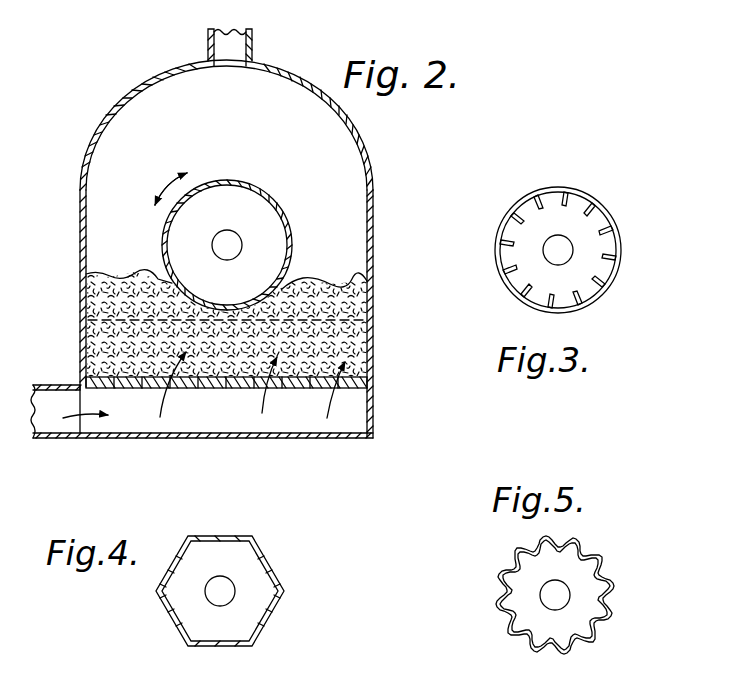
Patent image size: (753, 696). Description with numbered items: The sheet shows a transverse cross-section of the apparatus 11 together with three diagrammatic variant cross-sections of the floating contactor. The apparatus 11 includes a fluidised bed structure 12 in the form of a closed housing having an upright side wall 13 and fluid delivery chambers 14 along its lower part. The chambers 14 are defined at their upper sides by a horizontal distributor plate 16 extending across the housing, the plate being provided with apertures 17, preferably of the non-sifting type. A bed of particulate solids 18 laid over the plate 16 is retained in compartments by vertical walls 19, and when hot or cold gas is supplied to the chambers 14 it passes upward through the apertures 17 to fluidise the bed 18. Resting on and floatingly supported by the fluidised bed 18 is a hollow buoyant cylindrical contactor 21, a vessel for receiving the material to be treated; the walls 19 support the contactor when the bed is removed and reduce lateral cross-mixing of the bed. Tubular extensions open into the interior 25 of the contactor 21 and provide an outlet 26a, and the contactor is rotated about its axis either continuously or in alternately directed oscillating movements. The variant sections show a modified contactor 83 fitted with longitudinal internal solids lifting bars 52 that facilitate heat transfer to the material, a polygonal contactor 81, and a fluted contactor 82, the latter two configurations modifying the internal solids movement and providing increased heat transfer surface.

In FIG. 2, the apparatus 11 is at (369, 146).
In FIG. 2, the fluidised bed structure 12 is at (376, 218).
In FIG. 2, the upright side wall 13 is at (78, 212).
In FIG. 2, the fluid delivery chambers 14 is at (350, 412).
In FIG. 2, the horizontal distributor plate 16 is at (366, 383).
In FIG. 2, the apertures 17 is at (248, 388).
In FIG. 2, the bed of particulate solids 18 is at (360, 300).
In FIG. 2, the vertical walls 19 is at (330, 317).
In FIG. 2, the hollow buoyant cylindrical contactor 21 is at (268, 201).
In FIG. 2, the interior of the contactor 25 is at (225, 196).
In FIG. 2, the outlet 26a is at (234, 244).
In FIG. 3, the longitudinal internal solids lifting bars 52 is at (522, 222).
In FIG. 3, the modified contactor 83 is at (558, 231).
In FIG. 4, the polygonal contactor 81 is at (266, 553).
In FIG. 5, the fluted contactor 82 is at (609, 568).